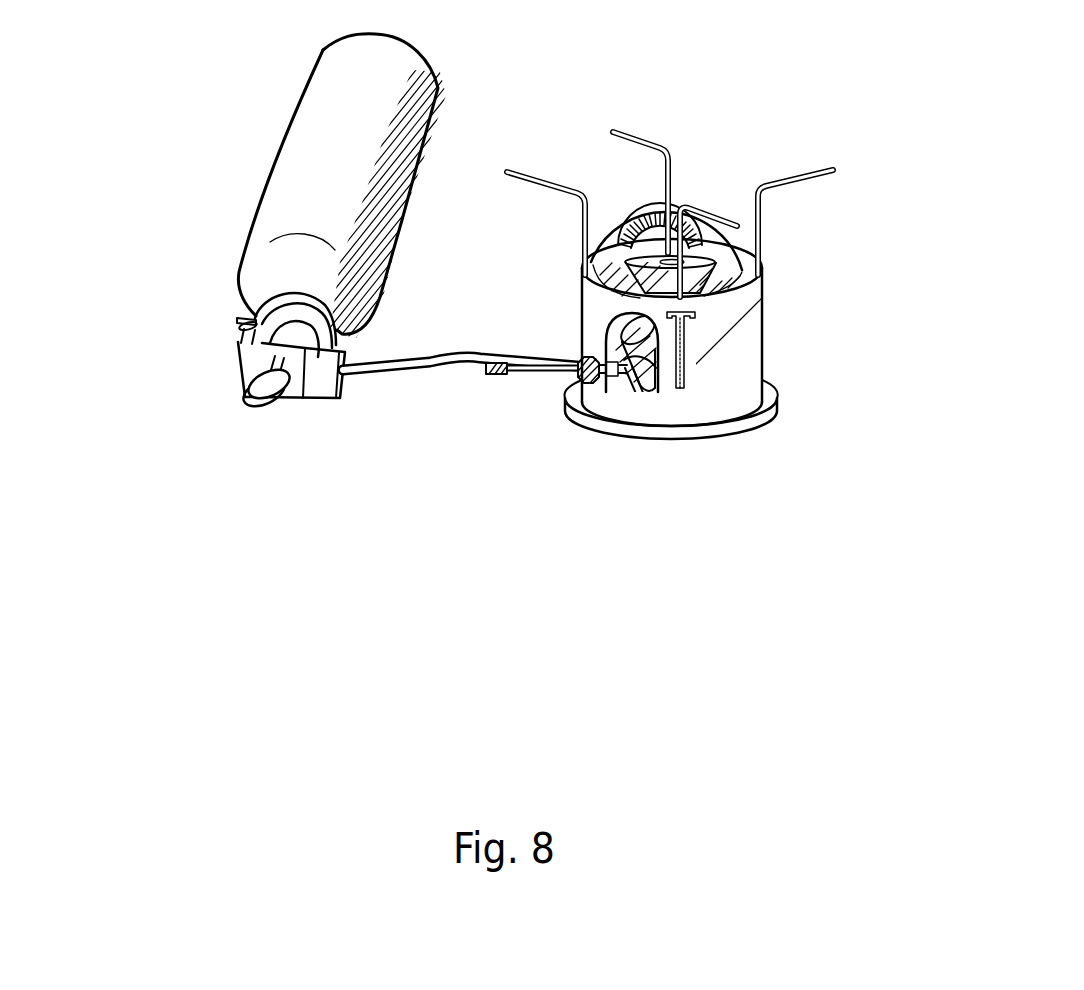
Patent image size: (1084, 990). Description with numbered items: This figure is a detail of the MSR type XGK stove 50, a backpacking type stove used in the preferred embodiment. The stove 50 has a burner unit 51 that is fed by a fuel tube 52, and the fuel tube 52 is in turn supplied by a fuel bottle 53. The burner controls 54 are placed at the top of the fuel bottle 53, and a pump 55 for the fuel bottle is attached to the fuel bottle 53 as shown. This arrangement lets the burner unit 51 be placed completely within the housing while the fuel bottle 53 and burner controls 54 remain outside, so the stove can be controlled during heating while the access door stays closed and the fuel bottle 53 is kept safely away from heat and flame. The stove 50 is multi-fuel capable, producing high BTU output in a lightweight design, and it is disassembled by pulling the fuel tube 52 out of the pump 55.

The stove 50 is at (693, 320).
The burner unit 51 is at (772, 311).
The fuel tube 52 is at (425, 385).
The fuel bottle 53 is at (255, 176).
The burner controls 54 is at (233, 328).
The pump 55 is at (250, 400).